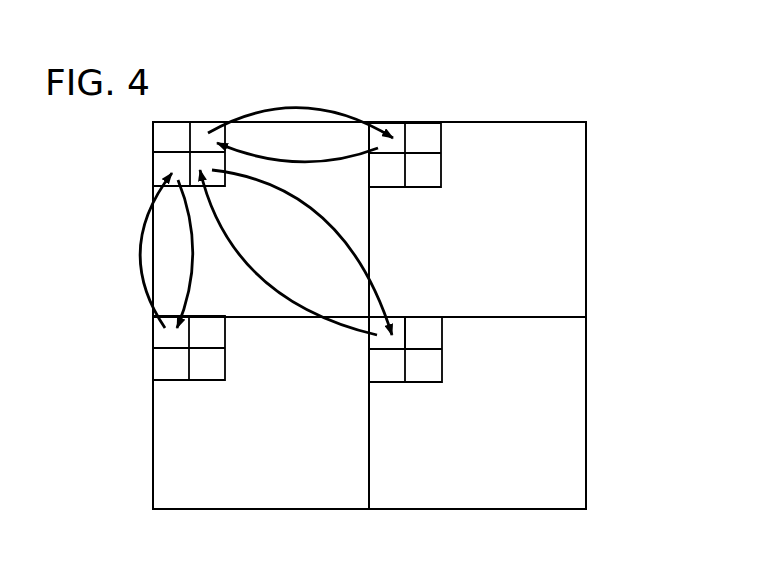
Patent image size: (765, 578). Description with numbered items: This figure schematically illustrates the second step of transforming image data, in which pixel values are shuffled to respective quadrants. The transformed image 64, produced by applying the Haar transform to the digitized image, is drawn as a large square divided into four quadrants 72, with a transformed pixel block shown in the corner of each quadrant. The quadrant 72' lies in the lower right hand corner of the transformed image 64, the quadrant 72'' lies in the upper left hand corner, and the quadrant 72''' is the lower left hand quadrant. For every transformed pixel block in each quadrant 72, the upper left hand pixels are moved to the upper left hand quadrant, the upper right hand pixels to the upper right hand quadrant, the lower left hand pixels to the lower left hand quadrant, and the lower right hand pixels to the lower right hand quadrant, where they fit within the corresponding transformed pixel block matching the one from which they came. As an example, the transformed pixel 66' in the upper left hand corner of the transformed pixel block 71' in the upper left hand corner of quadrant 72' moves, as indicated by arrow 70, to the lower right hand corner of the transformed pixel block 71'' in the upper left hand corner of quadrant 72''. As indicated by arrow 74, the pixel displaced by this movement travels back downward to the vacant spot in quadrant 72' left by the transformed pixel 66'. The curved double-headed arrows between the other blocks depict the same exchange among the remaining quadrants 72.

The transformed image 64 is at (607, 162).
The quadrants 72 is at (403, 315).
The quadrant in lower right hand corner 72' is at (513, 413).
The quadrant in upper left hand corner 72'' is at (214, 219).
The bottom-left sub-block 72''' is at (255, 435).
The transformed pixel block 71'' is at (166, 128).
The transformed pixel block 71' is at (439, 333).
The transformed pixel 66' is at (412, 304).
The arrow 70 is at (242, 260).
The arrow 74 is at (305, 207).